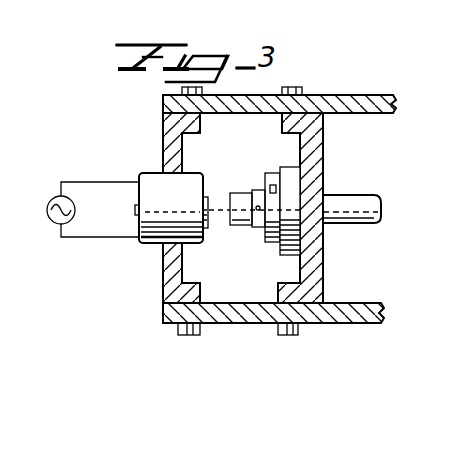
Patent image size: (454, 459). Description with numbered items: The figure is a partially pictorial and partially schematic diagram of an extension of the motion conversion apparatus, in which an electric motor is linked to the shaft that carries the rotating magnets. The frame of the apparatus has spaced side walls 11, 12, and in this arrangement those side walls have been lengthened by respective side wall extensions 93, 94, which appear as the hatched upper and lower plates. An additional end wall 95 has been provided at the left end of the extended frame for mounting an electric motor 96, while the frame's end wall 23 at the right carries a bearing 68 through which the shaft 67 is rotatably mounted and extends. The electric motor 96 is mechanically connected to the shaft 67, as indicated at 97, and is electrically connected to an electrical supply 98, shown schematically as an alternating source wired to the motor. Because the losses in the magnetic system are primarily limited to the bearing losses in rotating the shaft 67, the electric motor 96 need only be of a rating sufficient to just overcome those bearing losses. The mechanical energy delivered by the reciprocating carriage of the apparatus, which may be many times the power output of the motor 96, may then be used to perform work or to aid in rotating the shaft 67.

The side wall 11 is at (362, 96).
The side wall extension 93 is at (268, 94).
The side wall 12 is at (357, 303).
The side wall extension 94 is at (235, 310).
The additional end wall 95 is at (162, 279).
The end wall 23 is at (310, 272).
The shaft 67 is at (350, 202).
The electric motor 96 is at (152, 183).
The mechanical connection 97 is at (218, 207).
The electrical supply 98 is at (47, 194).
The bearing 68 is at (270, 171).